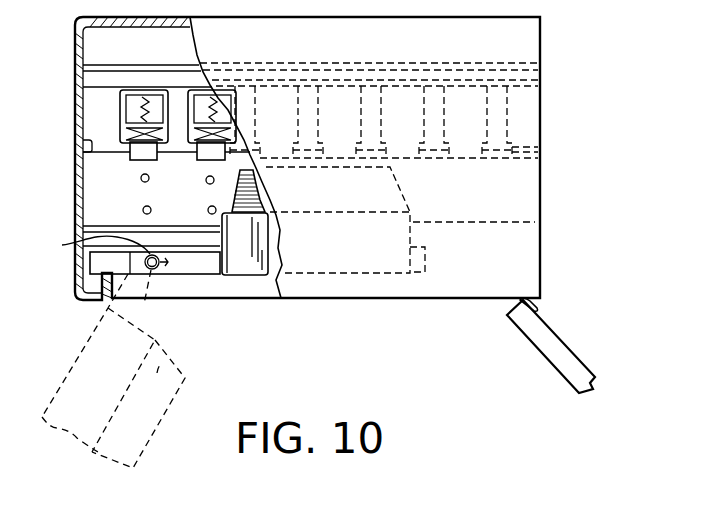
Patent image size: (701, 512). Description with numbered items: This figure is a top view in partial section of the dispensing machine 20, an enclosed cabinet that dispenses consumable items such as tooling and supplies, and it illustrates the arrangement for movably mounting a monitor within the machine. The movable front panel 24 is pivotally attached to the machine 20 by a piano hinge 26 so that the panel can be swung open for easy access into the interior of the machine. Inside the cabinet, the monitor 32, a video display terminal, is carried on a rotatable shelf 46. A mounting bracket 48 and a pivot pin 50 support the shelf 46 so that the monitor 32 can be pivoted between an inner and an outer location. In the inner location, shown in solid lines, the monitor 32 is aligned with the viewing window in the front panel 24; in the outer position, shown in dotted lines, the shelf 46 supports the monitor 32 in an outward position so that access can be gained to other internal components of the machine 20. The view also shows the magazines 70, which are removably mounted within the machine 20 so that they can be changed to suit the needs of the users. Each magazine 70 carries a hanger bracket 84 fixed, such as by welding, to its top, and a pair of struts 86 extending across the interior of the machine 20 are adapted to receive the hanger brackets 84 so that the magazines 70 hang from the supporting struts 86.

The dispensing machine 20 is at (494, 195).
The movable front panel 24 is at (567, 350).
The piano hinge 26 is at (537, 310).
The monitor 32 is at (264, 268).
The rotatable shelf 46 is at (110, 312).
The mounting bracket 48 is at (100, 262).
The pivot pin 50 is at (62, 245).
The magazine 70 is at (120, 109).
The hanger bracket 84 is at (137, 163).
The strut 86 is at (90, 146).